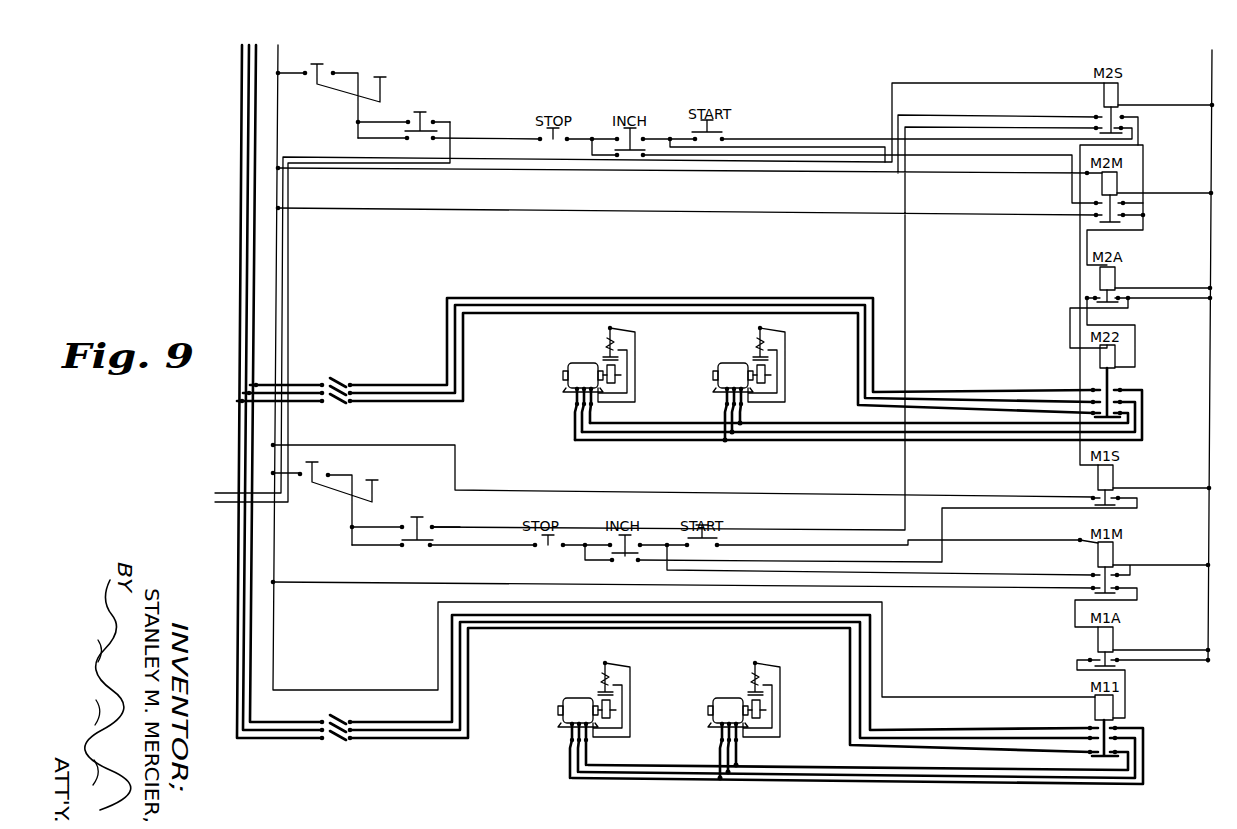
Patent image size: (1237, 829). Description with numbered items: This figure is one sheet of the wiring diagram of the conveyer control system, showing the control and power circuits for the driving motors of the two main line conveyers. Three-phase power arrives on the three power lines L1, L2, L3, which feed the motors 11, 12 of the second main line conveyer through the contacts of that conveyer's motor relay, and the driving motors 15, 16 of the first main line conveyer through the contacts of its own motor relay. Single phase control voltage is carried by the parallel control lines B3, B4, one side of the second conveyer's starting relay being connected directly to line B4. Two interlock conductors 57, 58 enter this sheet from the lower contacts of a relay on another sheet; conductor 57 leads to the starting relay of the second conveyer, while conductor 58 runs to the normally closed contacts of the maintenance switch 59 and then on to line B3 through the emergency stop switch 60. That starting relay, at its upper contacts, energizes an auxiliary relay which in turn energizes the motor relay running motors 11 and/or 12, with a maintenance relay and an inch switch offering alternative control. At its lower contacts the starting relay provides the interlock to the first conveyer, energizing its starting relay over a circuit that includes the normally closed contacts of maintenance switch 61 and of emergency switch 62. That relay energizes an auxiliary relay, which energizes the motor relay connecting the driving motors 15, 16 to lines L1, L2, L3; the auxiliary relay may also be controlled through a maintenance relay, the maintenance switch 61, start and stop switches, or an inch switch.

The motor 11 is at (583, 368).
The motor 12 is at (736, 370).
The driving motor 15 is at (578, 700).
The driving motor 16 is at (737, 701).
The conductor 57 is at (928, 83).
The conductor 58 is at (412, 164).
The maintenance switch 59 is at (427, 122).
The emergency stop switch 60 is at (322, 72).
The maintenance switch 61 is at (420, 525).
The emergency switch 62 is at (317, 473).
The control line B3 is at (280, 130).
The control line B4 is at (1210, 66).
The power line L1 is at (241, 63).
The power line L2 is at (248, 87).
The power line L3 is at (253, 108).